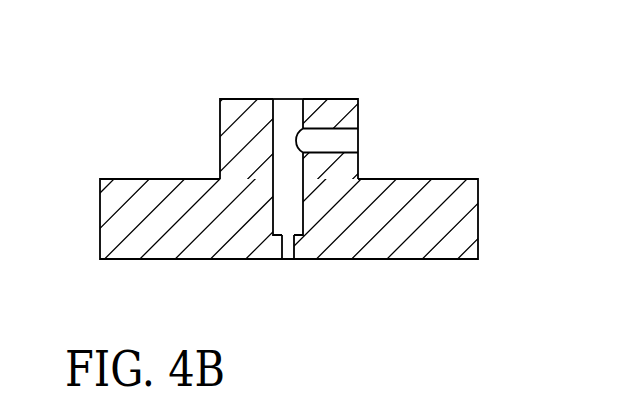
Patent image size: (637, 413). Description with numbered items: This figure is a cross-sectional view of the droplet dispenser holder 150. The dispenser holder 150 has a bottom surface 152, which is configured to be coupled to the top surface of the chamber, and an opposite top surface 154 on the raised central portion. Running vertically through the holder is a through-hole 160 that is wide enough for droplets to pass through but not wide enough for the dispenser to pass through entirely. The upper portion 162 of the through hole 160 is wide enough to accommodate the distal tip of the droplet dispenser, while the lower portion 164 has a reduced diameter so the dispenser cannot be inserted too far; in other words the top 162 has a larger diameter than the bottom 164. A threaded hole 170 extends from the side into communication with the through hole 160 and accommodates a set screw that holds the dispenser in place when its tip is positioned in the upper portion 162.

The dispenser holder 150 is at (318, 190).
The bottom surface 152 is at (402, 261).
The top surface 154 is at (239, 97).
The through-hole 160 is at (282, 167).
The upper portion of the through hole 162 is at (290, 104).
The lower portion of the through hole 164 is at (290, 255).
The threaded hole 170 is at (348, 141).